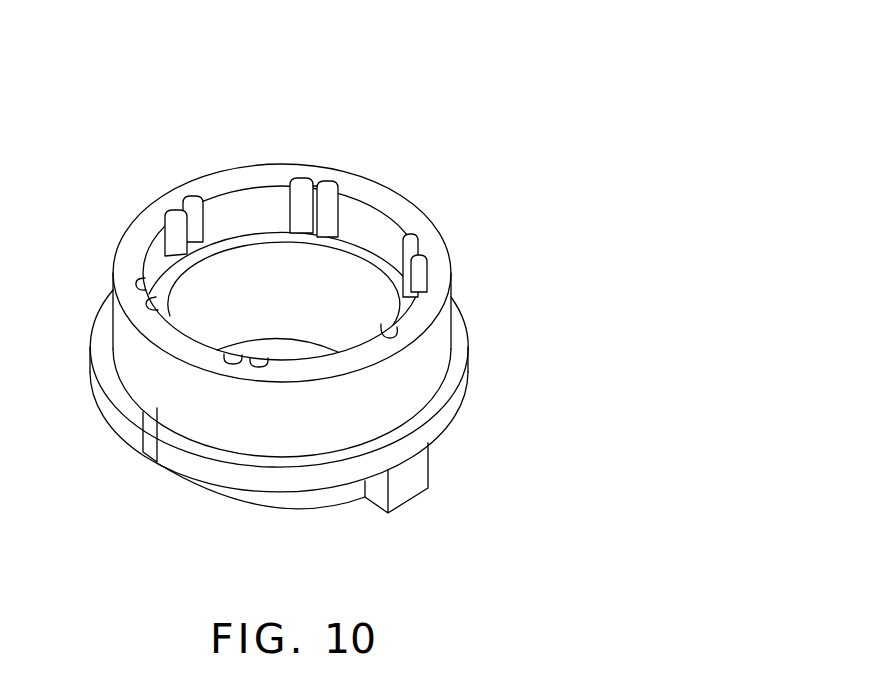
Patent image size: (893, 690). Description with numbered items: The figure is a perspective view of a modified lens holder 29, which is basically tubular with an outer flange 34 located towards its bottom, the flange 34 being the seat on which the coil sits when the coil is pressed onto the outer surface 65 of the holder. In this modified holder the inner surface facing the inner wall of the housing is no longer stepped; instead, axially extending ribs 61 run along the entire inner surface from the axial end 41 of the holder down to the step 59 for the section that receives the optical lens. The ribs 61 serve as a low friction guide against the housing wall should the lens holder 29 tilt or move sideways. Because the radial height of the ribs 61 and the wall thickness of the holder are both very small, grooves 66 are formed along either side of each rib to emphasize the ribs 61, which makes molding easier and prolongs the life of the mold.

The lens holder 29 is at (355, 272).
The outer flange 34 is at (412, 448).
The upper end 41 is at (401, 208).
The step 59 is at (218, 248).
The ribs 61 is at (316, 198).
The outer surface 65 is at (432, 350).
The grooves 66 is at (299, 185).